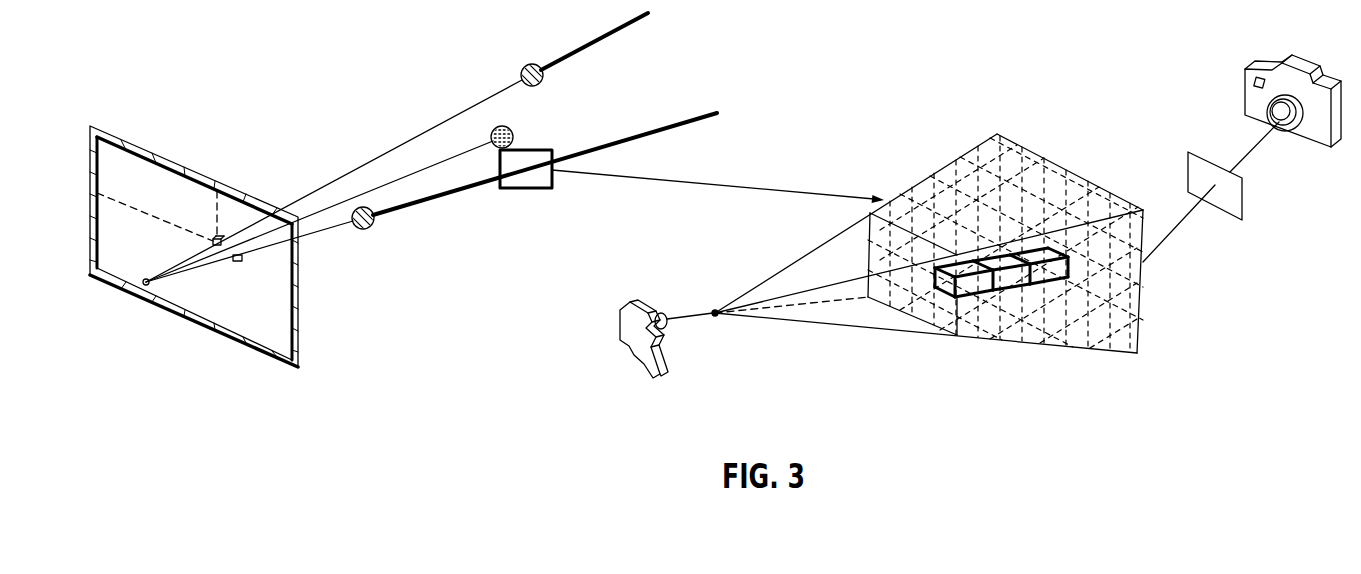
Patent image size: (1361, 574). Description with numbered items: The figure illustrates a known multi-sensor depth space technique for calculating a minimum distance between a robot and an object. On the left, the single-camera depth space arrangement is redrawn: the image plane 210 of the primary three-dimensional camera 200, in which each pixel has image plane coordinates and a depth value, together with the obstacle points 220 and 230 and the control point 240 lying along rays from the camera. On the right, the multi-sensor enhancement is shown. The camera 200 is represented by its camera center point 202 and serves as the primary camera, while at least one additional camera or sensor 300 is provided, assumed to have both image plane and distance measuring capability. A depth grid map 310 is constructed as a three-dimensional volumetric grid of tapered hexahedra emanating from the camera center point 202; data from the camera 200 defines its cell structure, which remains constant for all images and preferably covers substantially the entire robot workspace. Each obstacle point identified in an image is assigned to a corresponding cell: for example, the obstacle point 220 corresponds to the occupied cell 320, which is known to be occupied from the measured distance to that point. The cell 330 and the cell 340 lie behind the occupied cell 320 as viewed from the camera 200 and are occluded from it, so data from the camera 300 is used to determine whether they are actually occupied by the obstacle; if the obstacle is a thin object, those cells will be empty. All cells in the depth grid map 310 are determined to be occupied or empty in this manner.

The 3D camera 200 is at (620, 324).
The camera center point 202 is at (713, 310).
The image plane 210 is at (120, 124).
The obstacle point 220 is at (372, 227).
The obstacle point 230 is at (522, 70).
The control point 240 is at (493, 129).
The additional camera or sensor 300 is at (1297, 66).
The depth grid map 310 is at (962, 108).
The occupied cell 320 is at (967, 284).
The cell 330 is at (1006, 279).
The cell 340 is at (1053, 276).